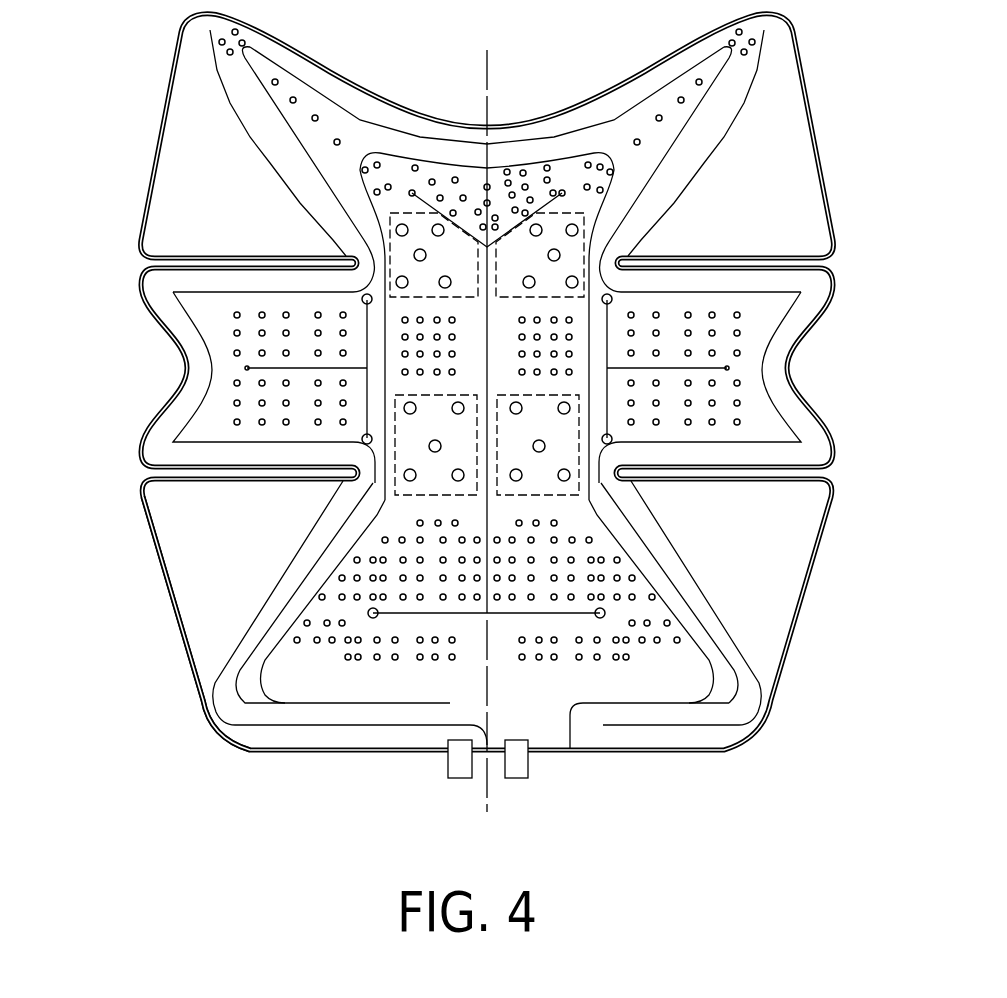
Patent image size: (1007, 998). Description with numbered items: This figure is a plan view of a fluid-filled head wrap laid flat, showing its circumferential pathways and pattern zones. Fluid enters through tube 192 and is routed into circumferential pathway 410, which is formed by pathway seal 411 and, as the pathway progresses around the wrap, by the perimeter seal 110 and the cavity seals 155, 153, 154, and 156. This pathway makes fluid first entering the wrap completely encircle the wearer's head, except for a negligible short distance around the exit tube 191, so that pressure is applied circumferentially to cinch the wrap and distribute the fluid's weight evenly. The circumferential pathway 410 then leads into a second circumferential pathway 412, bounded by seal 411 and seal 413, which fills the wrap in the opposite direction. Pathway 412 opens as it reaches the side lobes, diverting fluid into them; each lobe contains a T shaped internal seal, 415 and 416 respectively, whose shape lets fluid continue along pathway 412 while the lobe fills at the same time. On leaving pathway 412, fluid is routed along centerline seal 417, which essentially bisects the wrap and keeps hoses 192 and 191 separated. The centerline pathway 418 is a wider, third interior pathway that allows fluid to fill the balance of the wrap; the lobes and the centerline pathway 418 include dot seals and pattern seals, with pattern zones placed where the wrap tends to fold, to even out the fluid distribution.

The perimeter seal 110 is at (280, 767).
The cavity seal 153 is at (270, 163).
The cavity seal 154 is at (704, 163).
The cavity seal 155 is at (285, 575).
The cavity seal 156 is at (707, 580).
The exit tube 191 is at (528, 767).
The tube 192 is at (448, 767).
The circumferential pathway 410 is at (243, 754).
The pathway seal 411 is at (218, 694).
The second circumferential pathway 412 is at (618, 703).
The seal 413 is at (758, 733).
The T shaped internal seal 415 is at (698, 368).
The T shaped internal seal 416 is at (277, 368).
The centerline seal 417 is at (490, 542).
The centerline pathway 418 is at (395, 517).